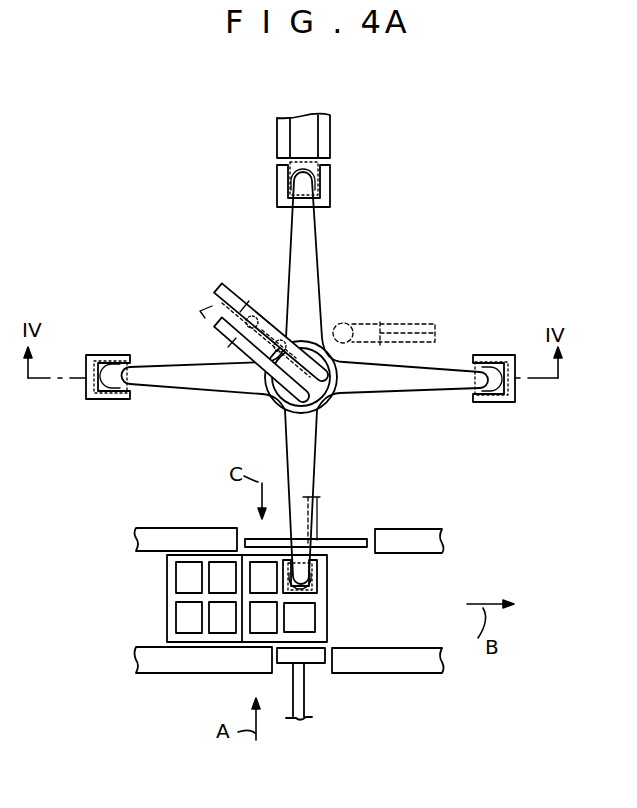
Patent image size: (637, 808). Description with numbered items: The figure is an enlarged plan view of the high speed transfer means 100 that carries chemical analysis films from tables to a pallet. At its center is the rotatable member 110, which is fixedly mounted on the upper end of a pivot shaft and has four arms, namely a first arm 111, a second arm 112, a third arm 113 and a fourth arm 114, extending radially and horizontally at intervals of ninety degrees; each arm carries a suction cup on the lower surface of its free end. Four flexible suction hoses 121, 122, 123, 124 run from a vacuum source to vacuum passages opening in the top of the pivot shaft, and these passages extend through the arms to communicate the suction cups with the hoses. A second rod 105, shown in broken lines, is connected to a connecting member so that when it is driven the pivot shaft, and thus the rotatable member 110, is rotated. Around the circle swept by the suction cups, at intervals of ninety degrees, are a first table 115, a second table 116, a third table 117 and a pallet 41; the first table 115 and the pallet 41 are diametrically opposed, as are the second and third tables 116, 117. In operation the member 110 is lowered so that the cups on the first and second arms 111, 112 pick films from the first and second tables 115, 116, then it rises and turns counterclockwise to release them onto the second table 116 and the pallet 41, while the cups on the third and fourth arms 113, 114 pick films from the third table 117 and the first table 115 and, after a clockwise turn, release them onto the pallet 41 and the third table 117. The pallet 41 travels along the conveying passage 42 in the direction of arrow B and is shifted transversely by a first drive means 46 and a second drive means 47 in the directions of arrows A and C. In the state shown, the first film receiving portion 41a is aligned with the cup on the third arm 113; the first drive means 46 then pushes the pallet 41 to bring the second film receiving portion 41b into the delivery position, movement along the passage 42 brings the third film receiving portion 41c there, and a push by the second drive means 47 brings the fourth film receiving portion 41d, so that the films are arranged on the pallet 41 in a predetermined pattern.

The high speed transfer means 100 is at (472, 199).
The rotatable member 110 is at (327, 297).
The first arm 111 is at (316, 243).
The second arm 112 is at (190, 390).
The third arm 113 is at (312, 468).
The fourth arm 114 is at (418, 392).
The first table 115 is at (330, 184).
The second table 116 is at (105, 401).
The third table 117 is at (500, 403).
The second rod 105 is at (411, 320).
The suction hose 121 is at (224, 278).
The suction hose 122 is at (205, 310).
The suction hose 123 is at (250, 388).
The suction hose 124 is at (252, 297).
The pallet 41 is at (335, 602).
The first film receiving portion 41a is at (320, 585).
The second film receiving portion 41b is at (320, 624).
The third film receiving portion 41c is at (248, 666).
The fourth film receiving portion 41d is at (258, 538).
The conveying passage 42 is at (420, 536).
The first drive means 46 is at (318, 664).
The second drive means 47 is at (342, 535).